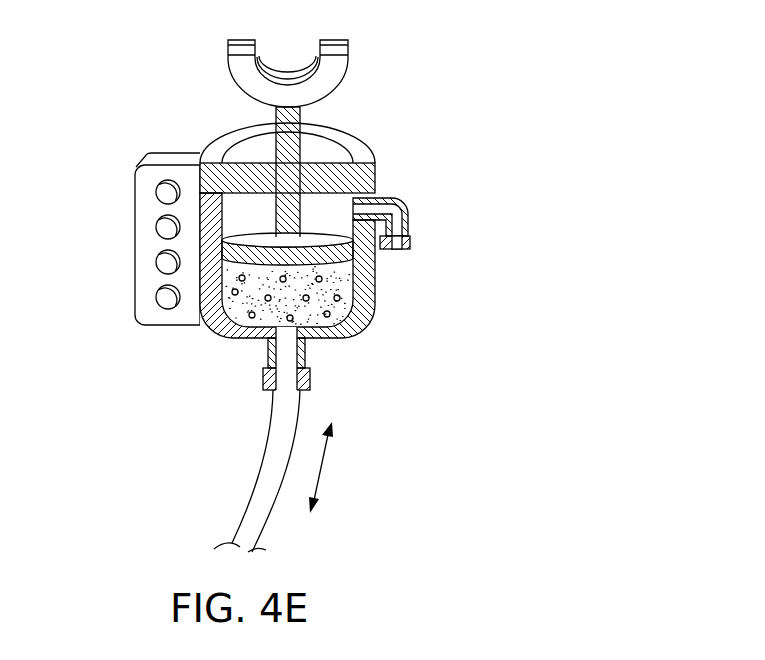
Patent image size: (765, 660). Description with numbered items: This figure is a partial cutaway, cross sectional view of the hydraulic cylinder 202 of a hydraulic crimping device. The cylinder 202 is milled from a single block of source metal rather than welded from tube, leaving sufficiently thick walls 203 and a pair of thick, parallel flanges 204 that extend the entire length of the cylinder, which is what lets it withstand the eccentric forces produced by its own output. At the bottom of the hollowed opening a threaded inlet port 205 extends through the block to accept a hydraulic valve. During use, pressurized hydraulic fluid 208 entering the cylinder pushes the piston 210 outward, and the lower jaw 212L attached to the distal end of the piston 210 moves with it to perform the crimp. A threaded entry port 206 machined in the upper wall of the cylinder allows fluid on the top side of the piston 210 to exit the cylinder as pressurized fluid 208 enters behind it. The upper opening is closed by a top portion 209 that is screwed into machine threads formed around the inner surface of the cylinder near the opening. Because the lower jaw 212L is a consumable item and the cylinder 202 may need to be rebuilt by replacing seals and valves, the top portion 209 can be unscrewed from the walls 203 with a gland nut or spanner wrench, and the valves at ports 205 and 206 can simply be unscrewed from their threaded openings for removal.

The hydraulic cylinder 202 is at (475, 88).
The cylinder walls 203 is at (364, 329).
The parallel flanges 204 is at (133, 297).
The threaded inlet port 205 is at (307, 352).
The threaded entry port 206 is at (390, 196).
The pressurized hydraulic fluid 208 is at (336, 272).
The top portion 209 is at (358, 147).
The piston 210 is at (273, 162).
The lower jaw 212L is at (333, 79).